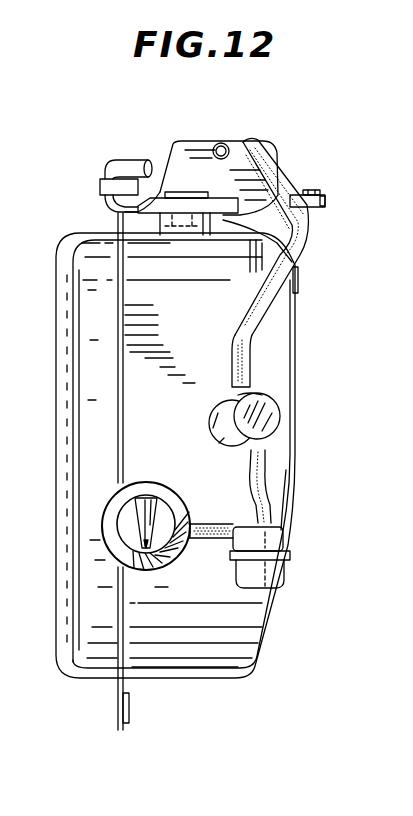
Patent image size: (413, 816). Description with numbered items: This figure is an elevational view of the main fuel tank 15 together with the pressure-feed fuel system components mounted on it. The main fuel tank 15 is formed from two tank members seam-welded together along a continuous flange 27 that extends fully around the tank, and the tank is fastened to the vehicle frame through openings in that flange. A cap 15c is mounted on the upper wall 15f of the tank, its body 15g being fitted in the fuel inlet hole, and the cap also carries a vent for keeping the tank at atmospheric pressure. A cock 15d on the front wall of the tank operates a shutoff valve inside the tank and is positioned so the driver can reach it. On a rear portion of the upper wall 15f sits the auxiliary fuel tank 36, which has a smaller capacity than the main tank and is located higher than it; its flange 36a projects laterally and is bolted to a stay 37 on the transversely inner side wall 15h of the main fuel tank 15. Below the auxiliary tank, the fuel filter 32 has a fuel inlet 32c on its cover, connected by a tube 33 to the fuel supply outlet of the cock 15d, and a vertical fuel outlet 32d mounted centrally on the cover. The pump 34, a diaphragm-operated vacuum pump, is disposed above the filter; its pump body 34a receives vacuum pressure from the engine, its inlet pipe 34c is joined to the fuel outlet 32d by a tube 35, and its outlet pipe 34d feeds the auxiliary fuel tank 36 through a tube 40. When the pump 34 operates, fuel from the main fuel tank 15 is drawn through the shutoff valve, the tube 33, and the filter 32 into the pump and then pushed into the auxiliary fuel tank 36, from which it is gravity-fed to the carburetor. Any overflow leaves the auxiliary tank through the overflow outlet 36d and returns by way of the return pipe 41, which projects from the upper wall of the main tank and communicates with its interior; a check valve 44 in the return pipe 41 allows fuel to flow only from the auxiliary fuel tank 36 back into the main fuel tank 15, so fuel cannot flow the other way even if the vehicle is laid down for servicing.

The main fuel tank 15 is at (73, 445).
The cap 15c is at (222, 203).
The cock 15d is at (165, 483).
The upper wall 15f is at (242, 233).
The body 15g is at (200, 233).
The transversely inner side wall 15h is at (297, 320).
The flange 27 is at (115, 470).
The fuel filter 32 is at (265, 575).
The fuel inlet 32c is at (215, 538).
The fuel outlet 32d is at (277, 513).
The tube 33 is at (200, 524).
The pump 34 is at (268, 421).
The pump body 34a is at (275, 402).
The inlet pipe 34c is at (265, 468).
The outlet pipe 34d is at (222, 392).
The tube 35 is at (275, 487).
The auxiliary fuel tank 36 is at (197, 141).
The flange 36a is at (322, 197).
The overflow outlet 36d is at (226, 143).
The stay 37 is at (323, 208).
The tube 40 is at (240, 328).
The return pipe 41 is at (130, 160).
The check valve 44 is at (100, 183).